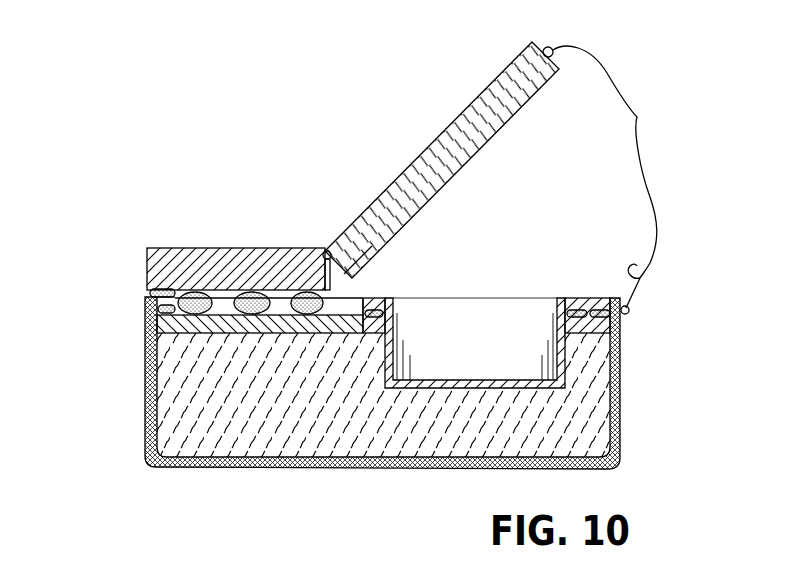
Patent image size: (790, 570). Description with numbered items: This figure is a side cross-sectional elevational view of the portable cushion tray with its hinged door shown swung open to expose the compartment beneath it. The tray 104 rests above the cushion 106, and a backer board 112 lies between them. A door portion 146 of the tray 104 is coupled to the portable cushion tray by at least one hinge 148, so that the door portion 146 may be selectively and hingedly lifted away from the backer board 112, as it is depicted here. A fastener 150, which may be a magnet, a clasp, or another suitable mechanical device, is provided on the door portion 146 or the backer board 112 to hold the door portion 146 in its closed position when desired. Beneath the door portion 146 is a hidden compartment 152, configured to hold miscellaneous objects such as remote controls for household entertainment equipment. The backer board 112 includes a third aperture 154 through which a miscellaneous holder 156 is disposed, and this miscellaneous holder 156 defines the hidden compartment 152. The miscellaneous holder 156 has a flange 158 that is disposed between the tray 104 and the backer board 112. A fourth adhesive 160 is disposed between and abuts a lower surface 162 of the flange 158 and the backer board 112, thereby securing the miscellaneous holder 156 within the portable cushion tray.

The tray 104 is at (147, 266).
The cushion 106 is at (147, 405).
The backer board 112 is at (157, 316).
The door portion 146 is at (492, 142).
The hinge 148 is at (328, 249).
The fastener 150 is at (614, 177).
The hidden compartment 152 is at (494, 361).
The third aperture 154 is at (530, 298).
The miscellaneous holder 156 is at (565, 368).
The flange 158 is at (620, 320).
The fourth adhesive 160 is at (373, 318).
The lower surface 162 is at (362, 304).